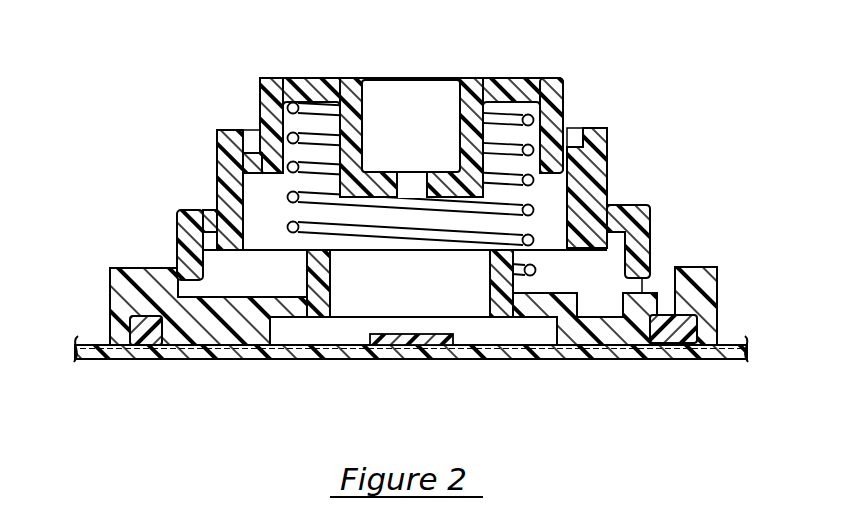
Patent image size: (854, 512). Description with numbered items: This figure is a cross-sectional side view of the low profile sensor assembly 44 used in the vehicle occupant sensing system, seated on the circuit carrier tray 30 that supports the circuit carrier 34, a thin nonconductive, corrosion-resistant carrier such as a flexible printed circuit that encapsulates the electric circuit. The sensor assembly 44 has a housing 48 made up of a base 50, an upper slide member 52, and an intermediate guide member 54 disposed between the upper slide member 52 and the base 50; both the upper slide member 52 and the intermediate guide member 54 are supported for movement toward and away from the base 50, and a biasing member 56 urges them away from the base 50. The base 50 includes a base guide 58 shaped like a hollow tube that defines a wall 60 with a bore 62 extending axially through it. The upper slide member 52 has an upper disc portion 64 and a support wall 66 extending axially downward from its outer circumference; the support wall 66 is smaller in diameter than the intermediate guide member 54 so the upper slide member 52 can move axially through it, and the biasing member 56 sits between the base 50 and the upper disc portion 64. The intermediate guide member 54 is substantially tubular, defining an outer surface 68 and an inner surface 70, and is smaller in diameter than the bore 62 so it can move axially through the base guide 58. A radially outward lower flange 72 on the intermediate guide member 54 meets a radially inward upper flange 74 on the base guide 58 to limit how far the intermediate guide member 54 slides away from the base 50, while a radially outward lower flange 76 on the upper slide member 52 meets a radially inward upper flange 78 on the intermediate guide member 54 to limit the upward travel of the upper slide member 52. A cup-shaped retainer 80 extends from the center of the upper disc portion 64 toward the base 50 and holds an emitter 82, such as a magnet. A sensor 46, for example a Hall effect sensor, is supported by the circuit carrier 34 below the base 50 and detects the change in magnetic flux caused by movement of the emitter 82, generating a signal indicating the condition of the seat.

The circuit carrier tray 30 is at (625, 355).
The circuit carrier 34 is at (495, 341).
The low profile sensor assembly 44 is at (603, 88).
The sensor 46 is at (404, 348).
The housing 48 is at (612, 192).
The base 50 is at (656, 242).
The upper slide member 52 is at (515, 80).
The intermediate guide member 54 is at (600, 155).
The biasing member 56 is at (290, 190).
The base guide 58 is at (650, 258).
The wall 60 is at (200, 233).
The bore 62 is at (200, 233).
The upper disc portion 64 is at (300, 78).
The support wall 66 is at (258, 114).
The outer surface 68 is at (217, 133).
The inner surface 70 is at (217, 193).
The lower flange 72 is at (648, 246).
The upper flange 74 is at (613, 233).
The lower flange 76 is at (244, 152).
The upper flange 78 is at (256, 135).
The retainer 80 is at (383, 90).
The emitter 82 is at (417, 90).